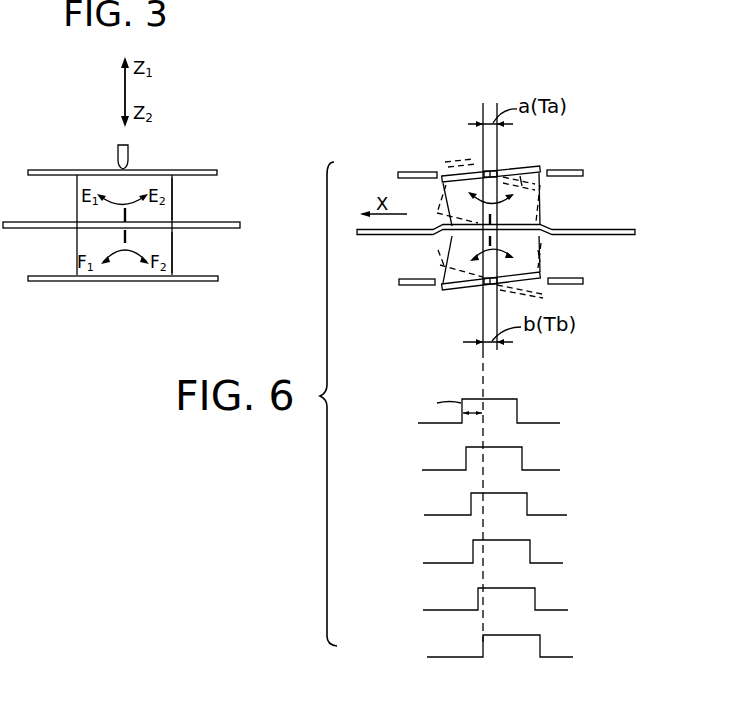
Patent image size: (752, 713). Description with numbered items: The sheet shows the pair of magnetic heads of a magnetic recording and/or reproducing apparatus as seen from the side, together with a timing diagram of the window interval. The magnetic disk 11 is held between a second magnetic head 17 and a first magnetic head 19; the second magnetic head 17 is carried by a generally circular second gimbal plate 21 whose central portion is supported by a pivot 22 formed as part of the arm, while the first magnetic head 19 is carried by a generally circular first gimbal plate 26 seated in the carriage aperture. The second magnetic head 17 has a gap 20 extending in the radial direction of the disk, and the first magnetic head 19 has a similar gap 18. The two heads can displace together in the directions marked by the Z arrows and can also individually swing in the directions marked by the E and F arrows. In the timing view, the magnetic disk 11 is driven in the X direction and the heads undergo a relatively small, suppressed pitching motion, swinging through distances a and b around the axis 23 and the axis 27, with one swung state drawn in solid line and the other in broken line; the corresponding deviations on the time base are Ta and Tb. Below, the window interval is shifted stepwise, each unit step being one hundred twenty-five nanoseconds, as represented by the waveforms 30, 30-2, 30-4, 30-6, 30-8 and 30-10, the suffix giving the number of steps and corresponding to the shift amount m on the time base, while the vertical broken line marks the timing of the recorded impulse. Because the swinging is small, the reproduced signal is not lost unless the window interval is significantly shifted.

In FIG. 3, the magnetic disk 11 is at (235, 221).
In FIG. 6, the magnetic disk 11 is at (601, 228).
In FIG. 3, the second magnetic head 17 is at (174, 197).
In FIG. 6, the second magnetic head 17 is at (542, 208).
In FIG. 3, the gap 18 is at (122, 236).
In FIG. 6, the gap 18 is at (440, 248).
In FIG. 3, the first magnetic head 19 is at (174, 254).
In FIG. 6, the first magnetic head 19 is at (440, 242).
In FIG. 3, the gap 20 is at (123, 211).
In FIG. 6, the gap 20 is at (500, 223).
In FIG. 3, the second gimbal plate 21 is at (217, 169).
In FIG. 6, the second gimbal plate 21 is at (418, 172).
In FIG. 3, the pivot 22 is at (129, 152).
In FIG. 6, the axis 23 is at (513, 198).
In FIG. 3, the first gimbal plate 26 is at (208, 281).
In FIG. 6, the first gimbal plate 26 is at (417, 286).
In FIG. 6, the axis 27 is at (543, 260).
In FIG. 6, the waveform 30 is at (520, 412).
In FIG. 6, the waveform 30-2 is at (524, 460).
In FIG. 6, the waveform 30-4 is at (530, 507).
In FIG. 6, the waveform 30-6 is at (532, 555).
In FIG. 6, the waveform 30-8 is at (537, 600).
In FIG. 6, the waveform 30-10 is at (541, 647).